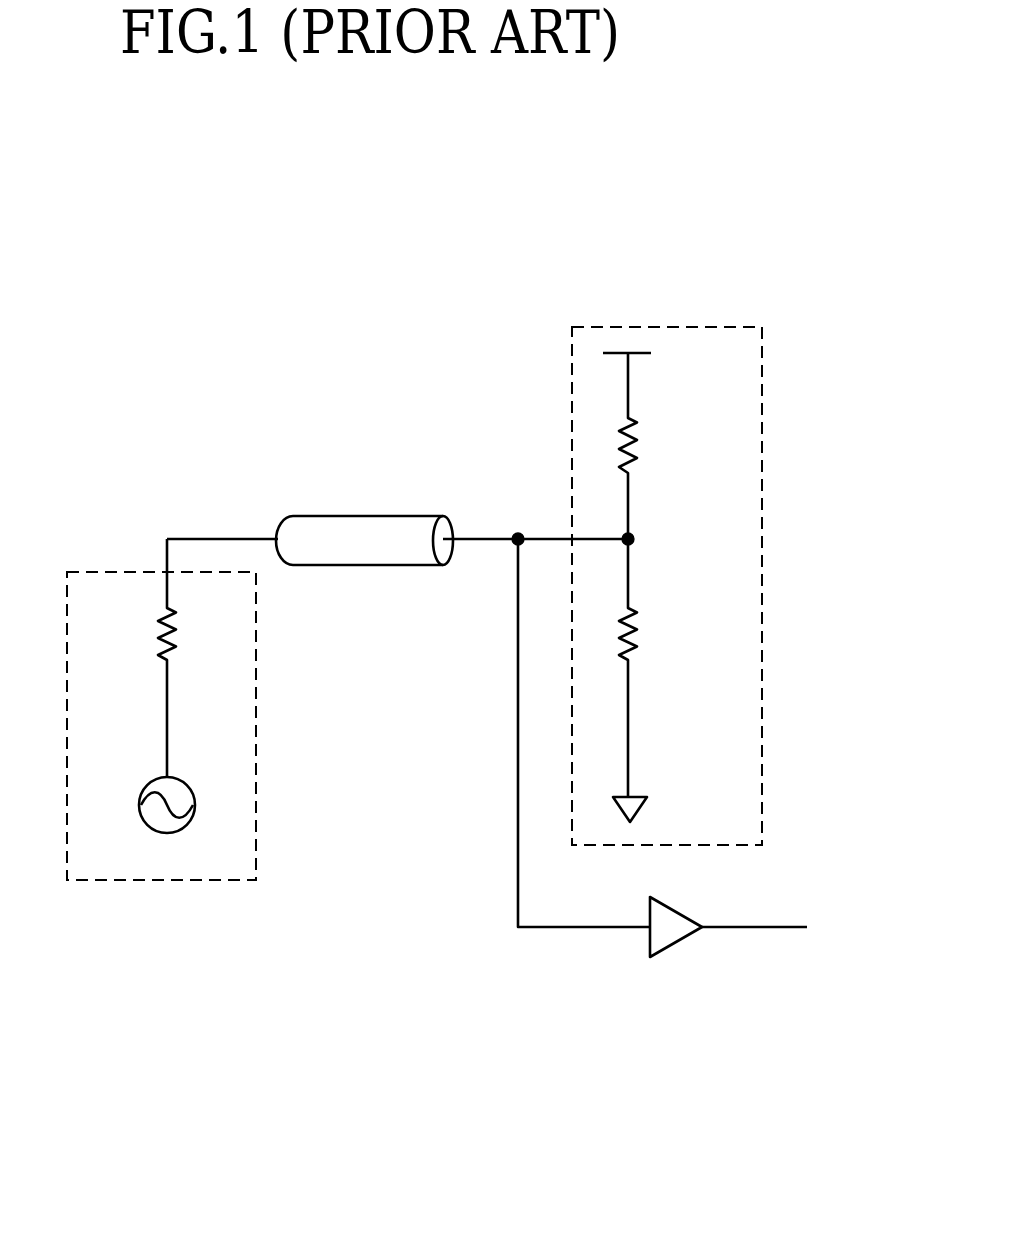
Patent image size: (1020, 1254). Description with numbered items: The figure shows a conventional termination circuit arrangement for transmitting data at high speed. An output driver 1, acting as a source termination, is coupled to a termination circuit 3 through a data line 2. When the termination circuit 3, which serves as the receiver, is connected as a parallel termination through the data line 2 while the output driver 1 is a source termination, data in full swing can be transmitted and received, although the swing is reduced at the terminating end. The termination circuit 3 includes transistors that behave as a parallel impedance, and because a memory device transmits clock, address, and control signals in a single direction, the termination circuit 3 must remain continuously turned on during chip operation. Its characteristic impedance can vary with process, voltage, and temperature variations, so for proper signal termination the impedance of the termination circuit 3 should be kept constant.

The output driver 1 is at (157, 880).
The data line 2 is at (407, 516).
The termination circuit 3 is at (762, 527).